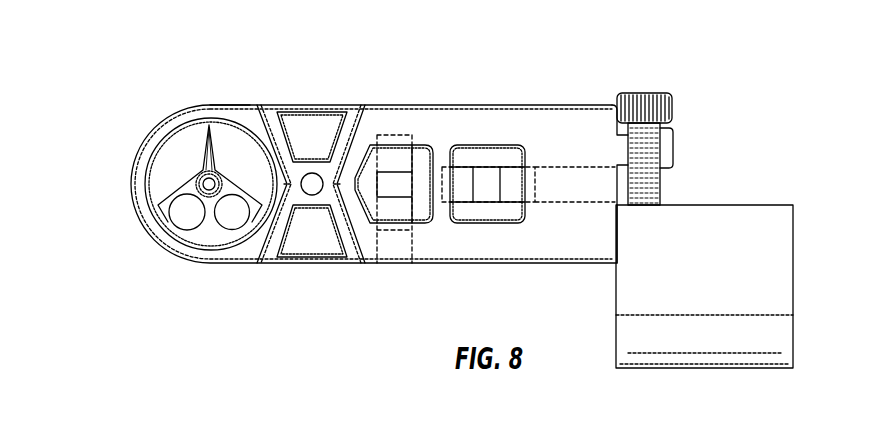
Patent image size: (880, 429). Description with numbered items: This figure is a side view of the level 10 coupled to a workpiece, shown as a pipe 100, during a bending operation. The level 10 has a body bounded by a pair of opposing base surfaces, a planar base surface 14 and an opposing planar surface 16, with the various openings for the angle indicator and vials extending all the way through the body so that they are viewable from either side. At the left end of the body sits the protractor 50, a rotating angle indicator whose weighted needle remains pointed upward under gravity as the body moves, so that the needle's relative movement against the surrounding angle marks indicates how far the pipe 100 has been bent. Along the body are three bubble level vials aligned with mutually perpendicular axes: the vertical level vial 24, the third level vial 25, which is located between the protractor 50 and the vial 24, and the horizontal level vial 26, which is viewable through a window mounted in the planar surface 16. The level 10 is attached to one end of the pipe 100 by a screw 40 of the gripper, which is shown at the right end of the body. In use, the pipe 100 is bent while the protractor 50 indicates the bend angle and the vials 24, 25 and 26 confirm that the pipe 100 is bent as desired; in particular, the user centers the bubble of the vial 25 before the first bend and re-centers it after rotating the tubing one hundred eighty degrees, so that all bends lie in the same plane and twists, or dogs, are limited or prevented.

The level 10 is at (144, 100).
The planar base surface 14 is at (491, 267).
The planar surface 16 is at (545, 97).
The vertical level vial 24 is at (395, 187).
The third level vial 25 is at (312, 172).
The horizontal level vial 26 is at (488, 190).
The screw 40 is at (643, 162).
The protractor 50 is at (183, 192).
The pipe 100 is at (772, 265).